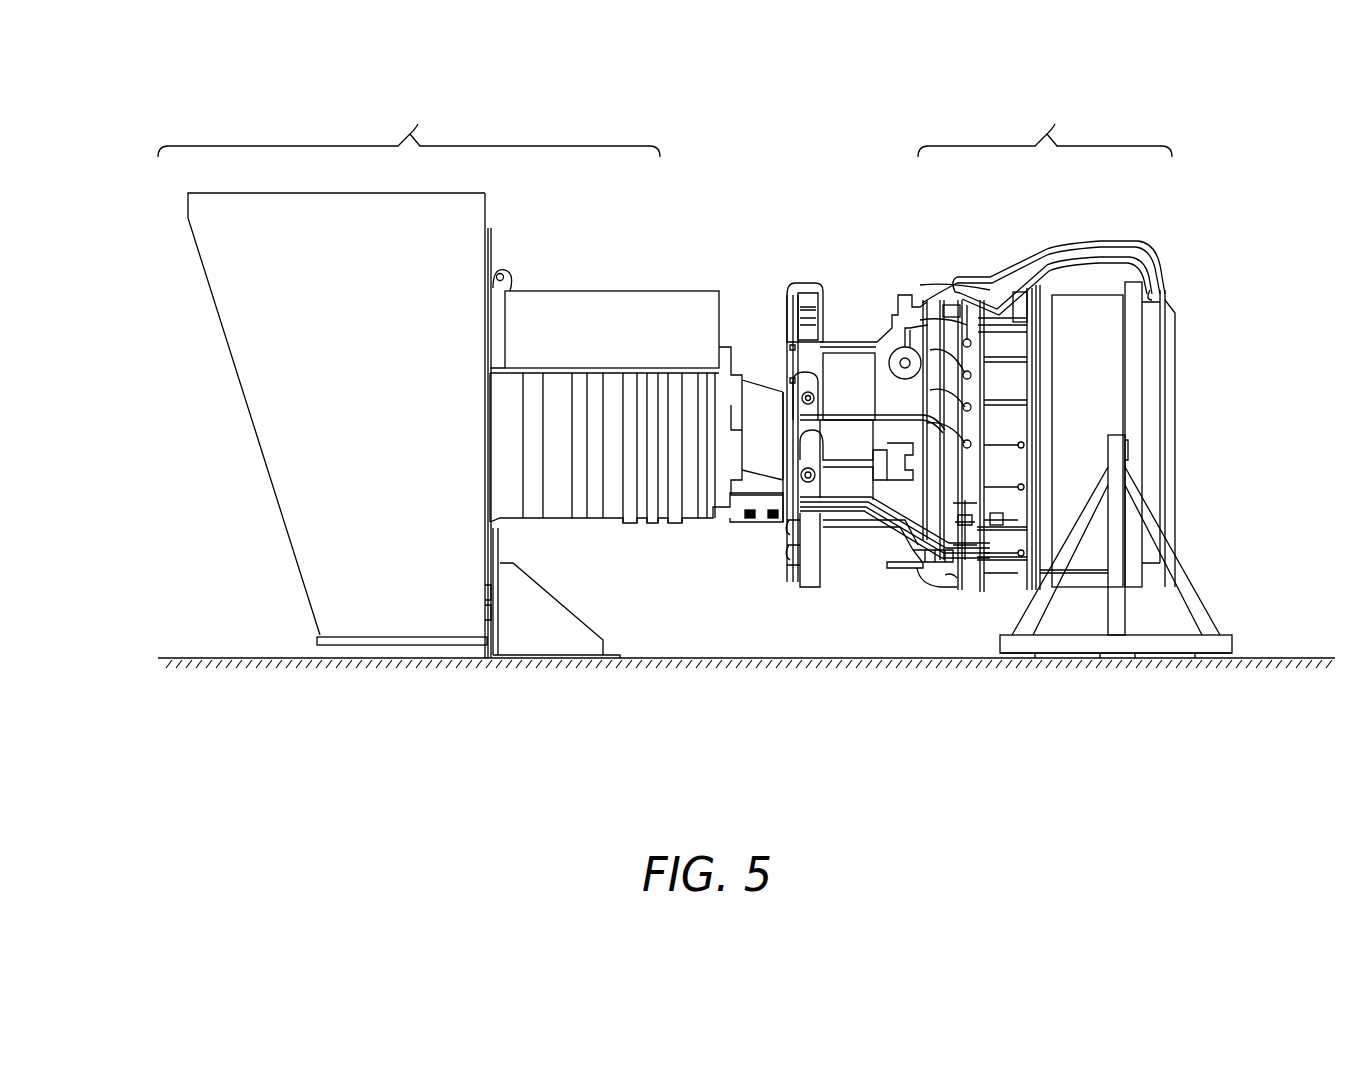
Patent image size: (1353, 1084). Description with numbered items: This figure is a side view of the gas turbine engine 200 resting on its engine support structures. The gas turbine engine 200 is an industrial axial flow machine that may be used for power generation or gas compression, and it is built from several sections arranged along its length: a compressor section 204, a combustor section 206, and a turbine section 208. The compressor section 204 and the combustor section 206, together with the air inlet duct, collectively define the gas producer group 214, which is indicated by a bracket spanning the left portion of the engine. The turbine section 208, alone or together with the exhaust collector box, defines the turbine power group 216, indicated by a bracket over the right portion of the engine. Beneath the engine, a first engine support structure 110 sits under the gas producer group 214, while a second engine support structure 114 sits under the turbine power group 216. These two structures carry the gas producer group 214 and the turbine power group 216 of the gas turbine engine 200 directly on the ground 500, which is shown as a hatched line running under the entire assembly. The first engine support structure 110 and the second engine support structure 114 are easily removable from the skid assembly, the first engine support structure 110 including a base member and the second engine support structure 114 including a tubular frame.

The gas turbine engine 200 is at (183, 313).
The gas producer group 214 is at (409, 126).
The turbine power group 216 is at (1045, 126).
The compressor section 204 is at (588, 290).
The combustor section 206 is at (834, 343).
The turbine section 208 is at (1063, 295).
The first engine support structure 110 is at (566, 592).
The second engine support structure 114 is at (1192, 554).
The ground 500 is at (1253, 658).